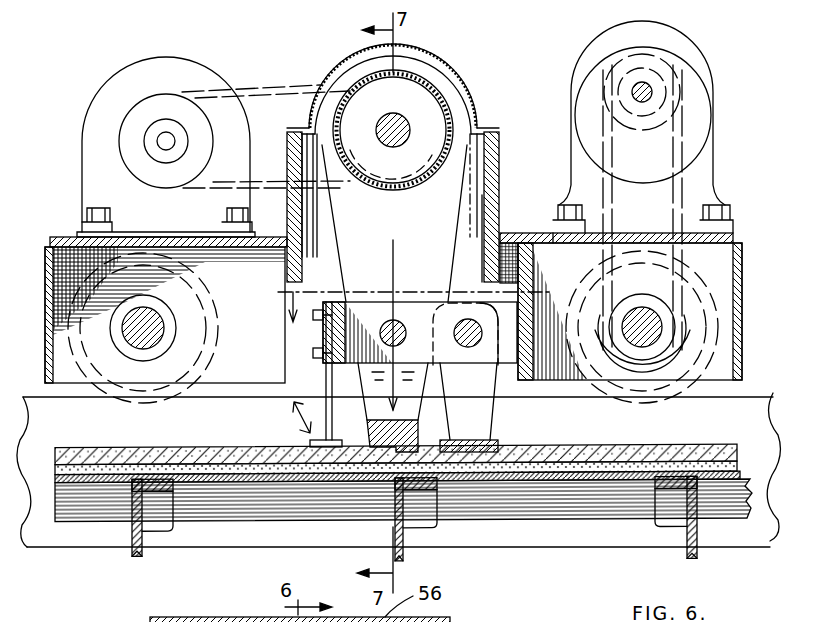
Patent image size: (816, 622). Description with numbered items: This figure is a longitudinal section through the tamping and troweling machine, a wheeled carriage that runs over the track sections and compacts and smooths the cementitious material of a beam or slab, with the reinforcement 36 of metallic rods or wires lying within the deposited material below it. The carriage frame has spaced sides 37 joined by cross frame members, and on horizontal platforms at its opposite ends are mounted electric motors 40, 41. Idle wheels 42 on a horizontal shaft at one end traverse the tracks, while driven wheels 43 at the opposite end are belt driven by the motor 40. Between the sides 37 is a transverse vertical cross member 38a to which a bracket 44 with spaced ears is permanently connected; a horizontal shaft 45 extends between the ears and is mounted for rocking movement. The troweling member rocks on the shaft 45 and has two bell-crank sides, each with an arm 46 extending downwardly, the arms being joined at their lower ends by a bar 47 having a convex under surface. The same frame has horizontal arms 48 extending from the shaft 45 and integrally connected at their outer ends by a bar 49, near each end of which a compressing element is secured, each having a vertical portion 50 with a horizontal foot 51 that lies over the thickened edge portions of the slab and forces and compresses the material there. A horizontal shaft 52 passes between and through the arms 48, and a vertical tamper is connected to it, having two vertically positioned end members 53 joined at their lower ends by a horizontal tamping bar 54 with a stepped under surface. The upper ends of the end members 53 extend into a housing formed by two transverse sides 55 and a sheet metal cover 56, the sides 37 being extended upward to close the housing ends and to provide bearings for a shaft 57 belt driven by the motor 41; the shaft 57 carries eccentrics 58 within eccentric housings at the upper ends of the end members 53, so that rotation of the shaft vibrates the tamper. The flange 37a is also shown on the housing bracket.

The reinforcement 36 is at (250, 472).
The sides 37 is at (243, 385).
The bracket flange 37a is at (477, 200).
The transverse vertical cross member 38a is at (560, 380).
The electric motor 40 is at (697, 112).
The electric motor 41 is at (187, 78).
The idle wheels 42 is at (137, 385).
The driven wheels 43 is at (637, 385).
The bracket 44 is at (503, 388).
The horizontal shaft 45 is at (468, 348).
The arm 46 is at (490, 422).
The bar 47 is at (475, 455).
The horizontal arms 48 is at (416, 305).
The bar 49 is at (350, 305).
The vertical portion 50 is at (323, 372).
The horizontal foot 51 is at (318, 450).
The horizontal shaft 52 is at (397, 300).
The end members 53 is at (343, 222).
The horizontal tamping bar 54 is at (390, 440).
The transverse sides 55 is at (497, 156).
The cover 56 is at (458, 82).
The shaft 57 is at (410, 132).
The eccentrics 58 is at (353, 112).